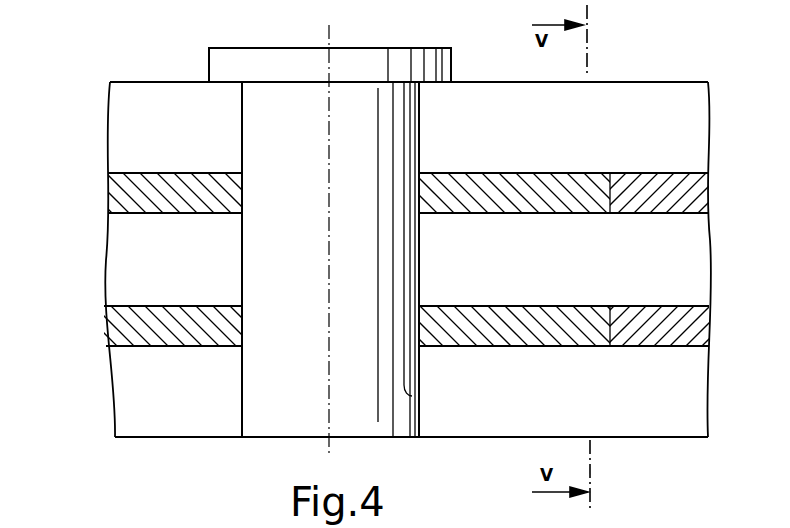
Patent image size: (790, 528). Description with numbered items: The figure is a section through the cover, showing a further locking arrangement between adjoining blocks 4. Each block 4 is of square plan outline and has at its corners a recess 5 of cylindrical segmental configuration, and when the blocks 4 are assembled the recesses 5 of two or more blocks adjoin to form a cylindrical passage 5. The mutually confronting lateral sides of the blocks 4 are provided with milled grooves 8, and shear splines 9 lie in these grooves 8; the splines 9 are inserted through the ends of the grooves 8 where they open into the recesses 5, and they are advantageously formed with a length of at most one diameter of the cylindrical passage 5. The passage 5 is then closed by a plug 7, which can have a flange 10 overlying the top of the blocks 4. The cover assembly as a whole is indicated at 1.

The housing assembly 1 is at (184, 74).
The block 4 is at (137, 98).
The recess 5 is at (412, 396).
The plug 7 is at (253, 446).
The milled groove 8 is at (188, 187).
The shear spline 9 is at (158, 193).
The flange 10 is at (413, 62).